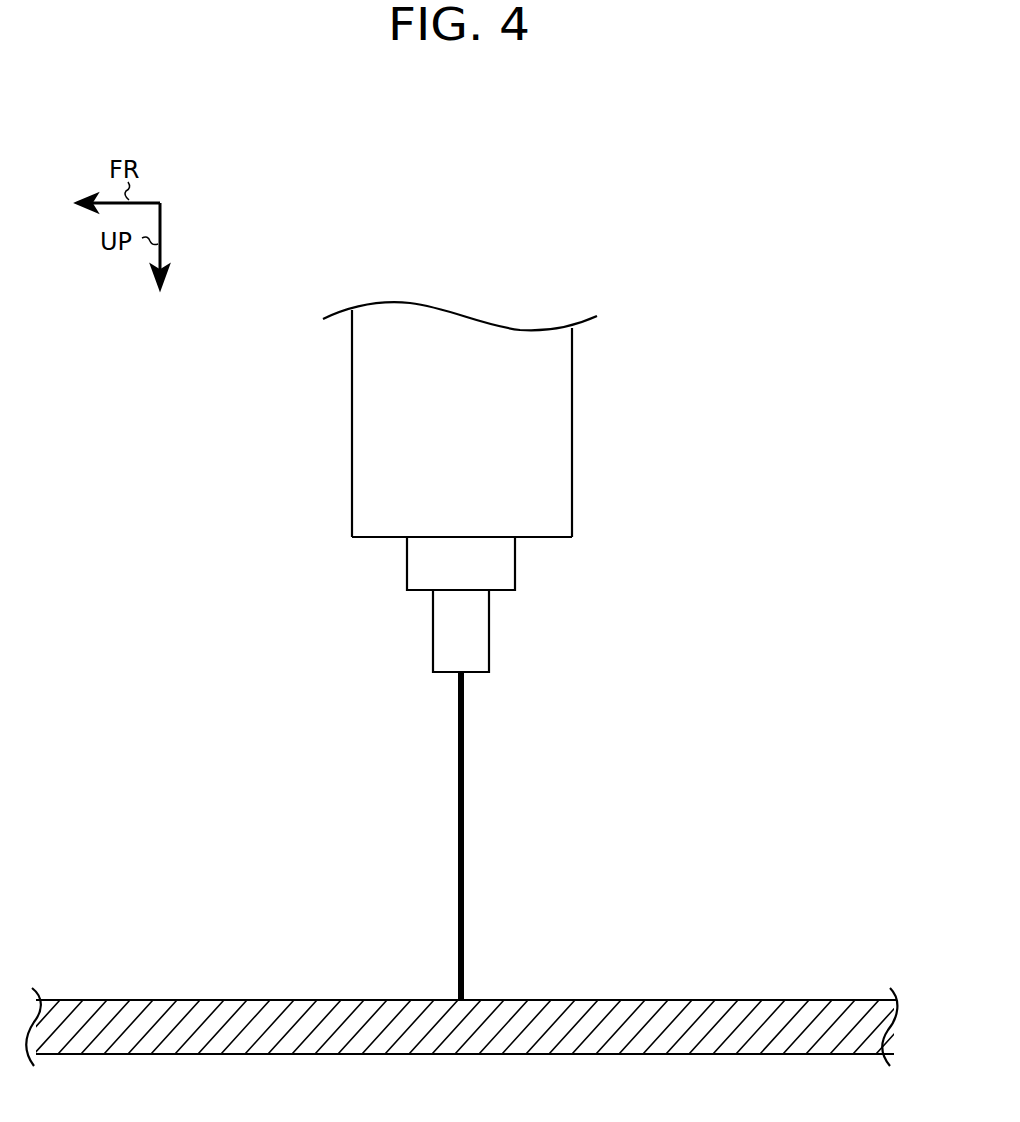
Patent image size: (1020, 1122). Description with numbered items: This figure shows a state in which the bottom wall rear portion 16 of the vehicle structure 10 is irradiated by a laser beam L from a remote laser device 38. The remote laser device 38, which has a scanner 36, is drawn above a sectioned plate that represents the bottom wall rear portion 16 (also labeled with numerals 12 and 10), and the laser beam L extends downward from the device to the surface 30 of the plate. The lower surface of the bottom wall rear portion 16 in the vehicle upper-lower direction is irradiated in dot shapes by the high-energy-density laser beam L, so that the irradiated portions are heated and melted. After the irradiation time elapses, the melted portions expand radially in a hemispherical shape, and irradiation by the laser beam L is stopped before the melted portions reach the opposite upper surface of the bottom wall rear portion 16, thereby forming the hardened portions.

The remote laser device 38 is at (487, 487).
The scanner 36 is at (352, 403).
The laser beam L is at (457, 797).
The bottom wall rear portion 16 is at (462, 992).
The workpiece member 12 is at (462, 992).
The vehicle structure 10 is at (462, 992).
The irradiated surface 30 is at (634, 985).